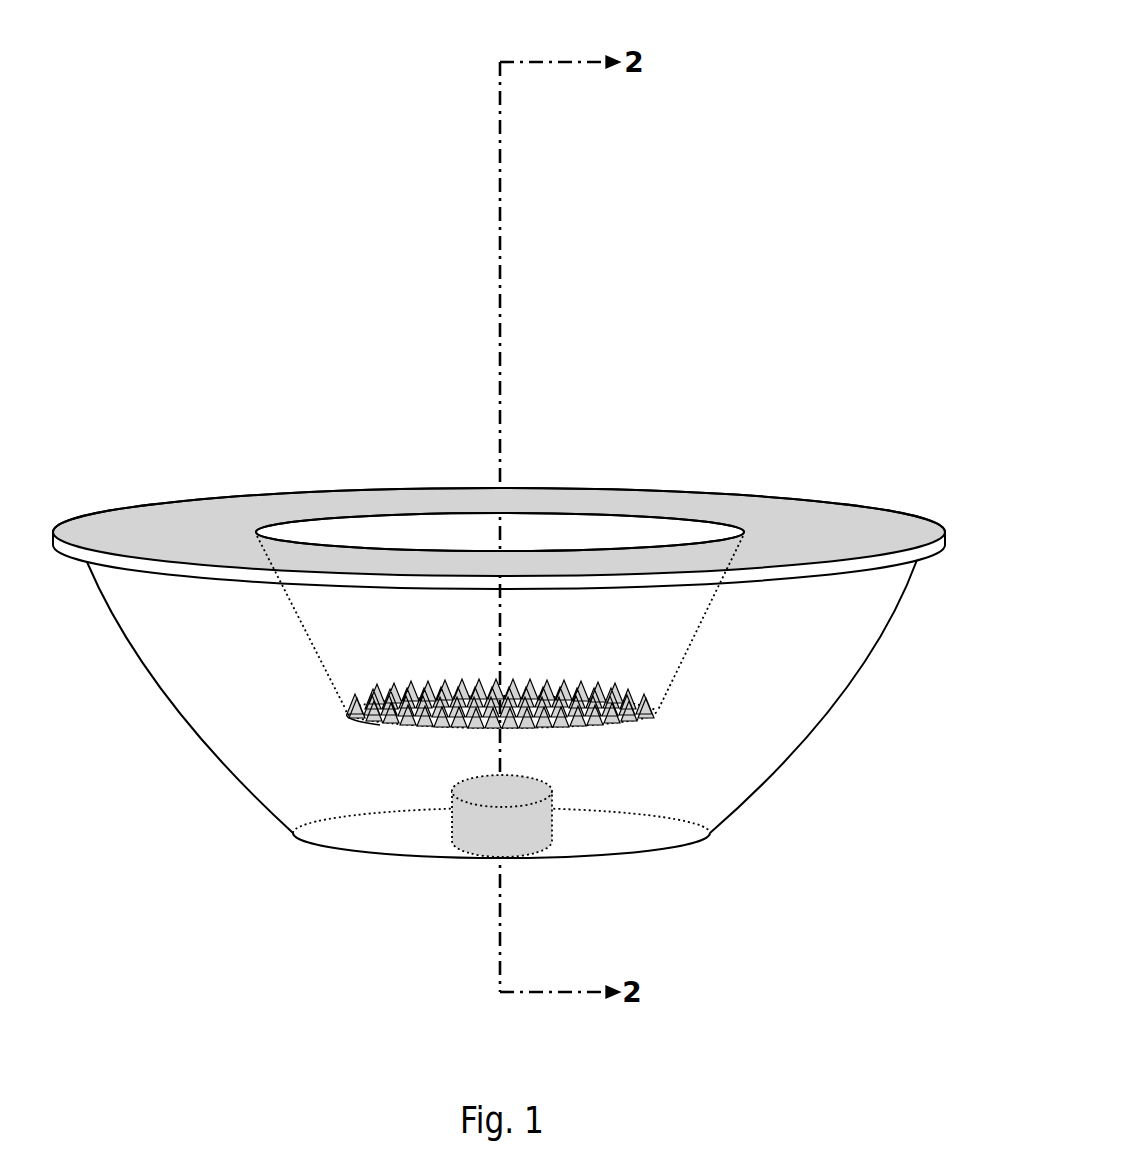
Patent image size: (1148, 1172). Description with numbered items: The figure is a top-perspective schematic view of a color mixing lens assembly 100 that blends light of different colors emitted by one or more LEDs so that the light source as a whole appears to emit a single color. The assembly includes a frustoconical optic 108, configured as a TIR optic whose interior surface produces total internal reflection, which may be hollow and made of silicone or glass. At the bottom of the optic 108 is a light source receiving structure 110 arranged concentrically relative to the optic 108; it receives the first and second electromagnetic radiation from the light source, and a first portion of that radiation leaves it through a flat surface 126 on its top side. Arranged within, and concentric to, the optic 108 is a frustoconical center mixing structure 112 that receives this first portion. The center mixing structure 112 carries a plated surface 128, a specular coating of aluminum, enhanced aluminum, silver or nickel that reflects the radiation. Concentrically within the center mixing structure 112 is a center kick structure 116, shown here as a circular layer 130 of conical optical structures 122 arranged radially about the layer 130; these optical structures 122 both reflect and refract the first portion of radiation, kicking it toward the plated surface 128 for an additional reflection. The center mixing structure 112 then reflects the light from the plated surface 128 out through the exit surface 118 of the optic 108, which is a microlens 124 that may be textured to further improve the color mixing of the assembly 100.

The color mixing lens assembly 100 is at (703, 130).
The optic 108 is at (205, 751).
The light source receiving structure 110 is at (556, 816).
The center mixing structure 112 is at (422, 541).
The center kick structure 116 is at (536, 684).
The exit surface 118 is at (807, 500).
The optical structures 122 is at (390, 687).
The microlens 124 is at (177, 513).
The flat surface 126 is at (518, 785).
The plated surface 128 is at (308, 643).
The layer of optical structures 130 is at (357, 728).